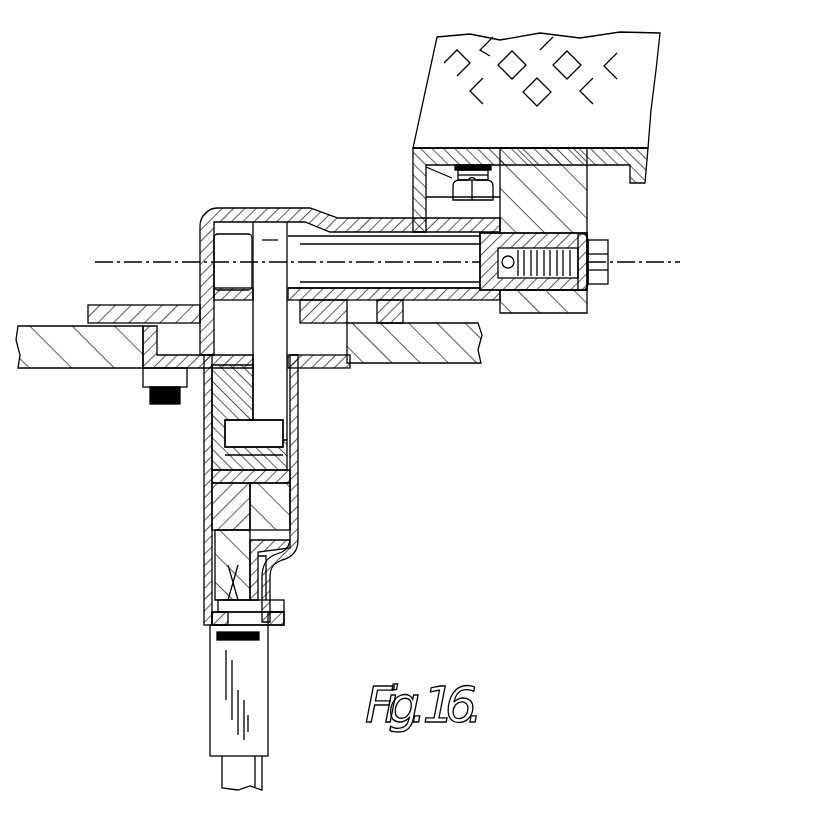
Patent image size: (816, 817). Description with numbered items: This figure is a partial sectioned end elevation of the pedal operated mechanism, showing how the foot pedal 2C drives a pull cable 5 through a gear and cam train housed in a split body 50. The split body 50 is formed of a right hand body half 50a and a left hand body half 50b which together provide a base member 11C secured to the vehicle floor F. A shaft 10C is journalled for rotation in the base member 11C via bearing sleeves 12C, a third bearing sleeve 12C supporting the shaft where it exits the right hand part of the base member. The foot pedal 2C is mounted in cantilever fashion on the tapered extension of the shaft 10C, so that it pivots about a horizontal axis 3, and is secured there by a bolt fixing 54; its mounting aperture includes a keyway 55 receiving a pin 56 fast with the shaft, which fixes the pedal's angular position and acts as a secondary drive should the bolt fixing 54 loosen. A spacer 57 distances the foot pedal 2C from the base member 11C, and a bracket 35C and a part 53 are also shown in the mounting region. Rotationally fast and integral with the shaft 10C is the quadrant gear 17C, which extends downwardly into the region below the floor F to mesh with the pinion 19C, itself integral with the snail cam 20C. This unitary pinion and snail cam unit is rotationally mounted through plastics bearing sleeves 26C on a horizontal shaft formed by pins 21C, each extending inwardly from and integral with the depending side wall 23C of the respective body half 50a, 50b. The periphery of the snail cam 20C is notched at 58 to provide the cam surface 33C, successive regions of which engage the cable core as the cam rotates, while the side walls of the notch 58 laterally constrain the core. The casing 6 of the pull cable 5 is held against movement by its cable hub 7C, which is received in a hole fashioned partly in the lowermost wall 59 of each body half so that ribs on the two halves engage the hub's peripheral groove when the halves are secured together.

The foot pedal 2C is at (634, 113).
The mounting bracket 35C is at (428, 152).
The spacer 57 is at (417, 217).
The bearing sleeve 12C is at (332, 222).
The shaft 10C is at (233, 247).
The base member 11C is at (135, 305).
The vehicle floor F is at (40, 340).
The horizontal axis 3 is at (477, 302).
The keyway 55 is at (527, 232).
The bolt fixing 54 is at (604, 253).
The plunger housing 53 is at (587, 284).
The pin 56 is at (520, 302).
The quadrant gear 17C is at (276, 419).
The snail cam 20C is at (216, 415).
The pinion 19C is at (268, 470).
The bearing sleeve 26C is at (212, 474).
The pin 21C is at (212, 503).
The split body 50 is at (198, 534).
The depending side wall 23C is at (214, 560).
The right hand body half 50a is at (270, 591).
The left hand body half 50b is at (212, 594).
The cam surface 33C is at (215, 608).
The notch 58 is at (270, 605).
The lowermost wall 59 is at (212, 626).
The cable hub 7C is at (250, 700).
The pull cable 5 is at (200, 715).
The casing 6 is at (228, 769).